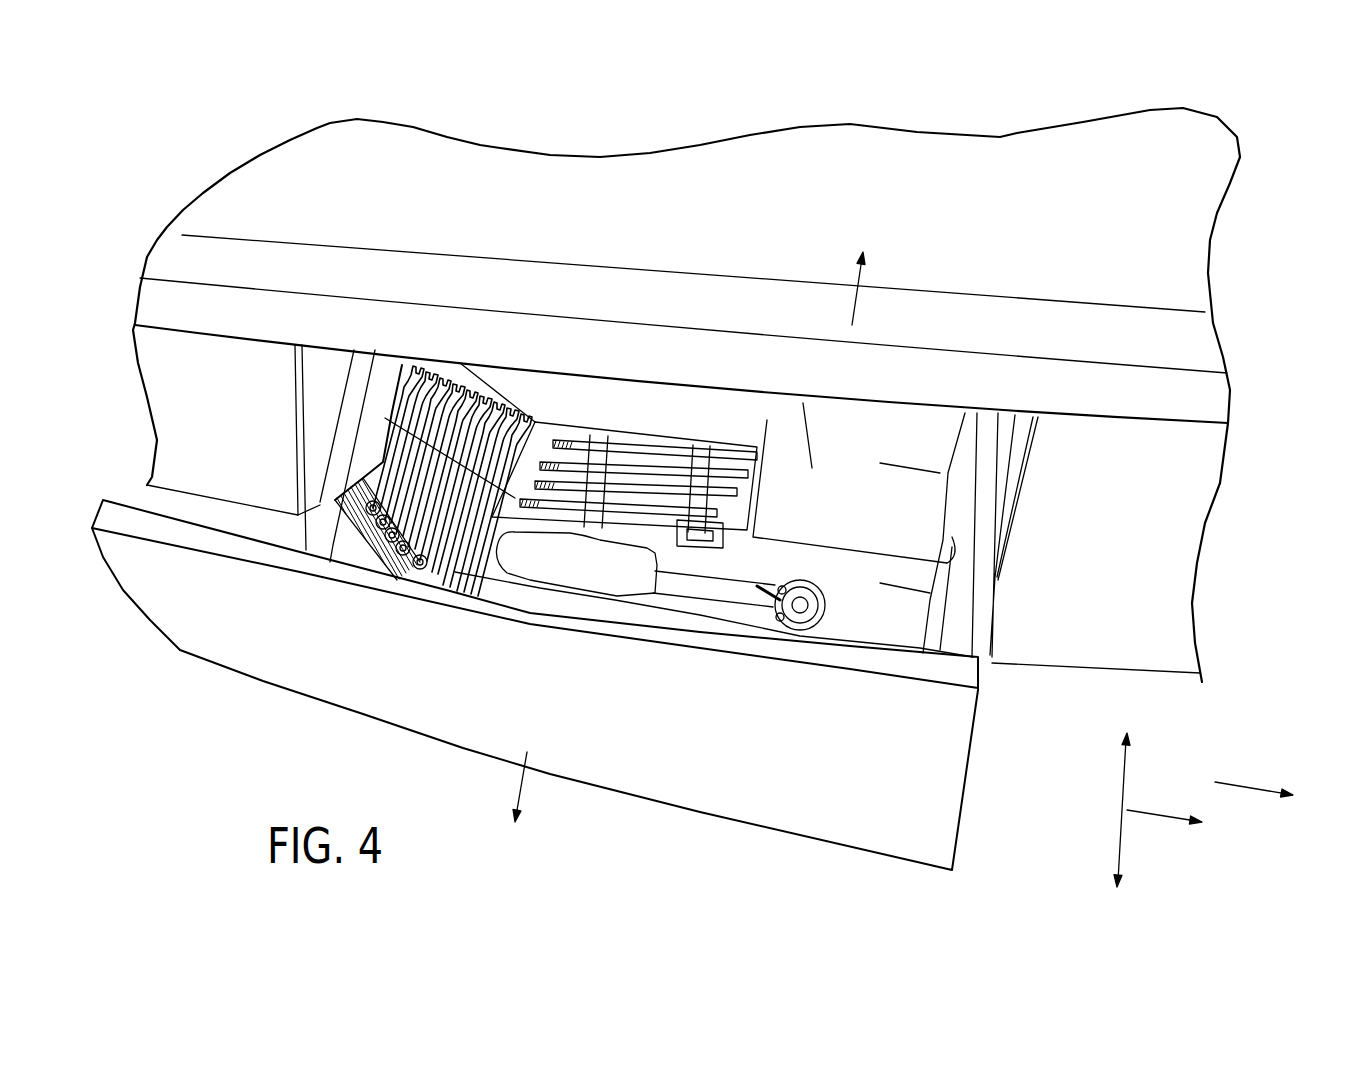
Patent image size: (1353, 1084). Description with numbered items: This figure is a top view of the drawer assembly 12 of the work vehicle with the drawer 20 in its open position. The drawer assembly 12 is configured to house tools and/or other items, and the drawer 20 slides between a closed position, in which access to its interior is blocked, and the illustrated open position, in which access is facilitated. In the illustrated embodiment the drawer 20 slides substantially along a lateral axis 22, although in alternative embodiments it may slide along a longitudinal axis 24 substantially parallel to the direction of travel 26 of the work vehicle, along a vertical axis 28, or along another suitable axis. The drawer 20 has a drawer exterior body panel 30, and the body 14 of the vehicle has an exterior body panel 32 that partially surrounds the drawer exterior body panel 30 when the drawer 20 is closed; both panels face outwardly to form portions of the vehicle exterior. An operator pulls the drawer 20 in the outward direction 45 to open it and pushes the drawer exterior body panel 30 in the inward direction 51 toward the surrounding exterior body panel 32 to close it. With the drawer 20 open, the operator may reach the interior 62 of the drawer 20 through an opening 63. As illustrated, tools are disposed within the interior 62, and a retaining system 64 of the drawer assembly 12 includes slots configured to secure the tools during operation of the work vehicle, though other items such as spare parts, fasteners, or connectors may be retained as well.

The drawer assembly 12 is at (669, 312).
The body 14 is at (1162, 580).
The drawer 20 is at (943, 762).
The lateral axis 22 is at (1120, 843).
The longitudinal axis 24 is at (1160, 818).
The direction of travel 26 is at (1247, 783).
The vertical axis 28 is at (1130, 800).
The drawer exterior body panel 30 is at (775, 797).
The exterior body panel 32 is at (1182, 503).
The outward direction 45 is at (517, 780).
The inward direction 51 is at (863, 303).
The interior 62 is at (672, 434).
The opening 63 is at (558, 413).
The retaining system 64 is at (373, 413).